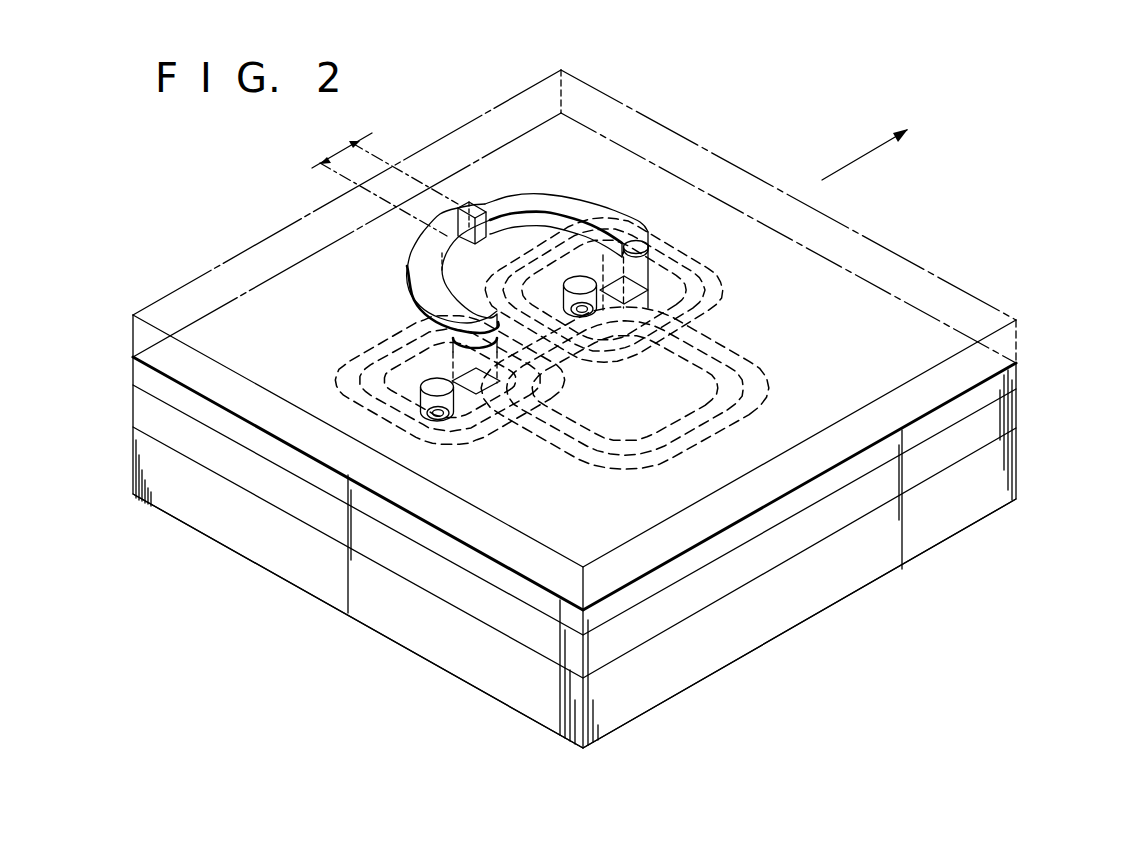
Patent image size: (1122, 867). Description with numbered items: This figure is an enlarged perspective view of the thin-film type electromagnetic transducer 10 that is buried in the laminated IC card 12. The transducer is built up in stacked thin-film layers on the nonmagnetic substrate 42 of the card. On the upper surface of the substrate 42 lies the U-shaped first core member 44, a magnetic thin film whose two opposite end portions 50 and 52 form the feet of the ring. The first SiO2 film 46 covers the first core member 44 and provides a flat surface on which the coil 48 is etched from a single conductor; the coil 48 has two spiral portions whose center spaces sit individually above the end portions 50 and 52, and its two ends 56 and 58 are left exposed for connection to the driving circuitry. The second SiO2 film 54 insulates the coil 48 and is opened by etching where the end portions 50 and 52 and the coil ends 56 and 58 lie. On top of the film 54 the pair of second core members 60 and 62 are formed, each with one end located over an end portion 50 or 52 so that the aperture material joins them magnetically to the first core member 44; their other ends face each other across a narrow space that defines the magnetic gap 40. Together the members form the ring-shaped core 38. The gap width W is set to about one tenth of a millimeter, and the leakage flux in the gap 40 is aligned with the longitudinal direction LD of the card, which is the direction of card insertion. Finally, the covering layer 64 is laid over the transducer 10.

The thin-film type electromagnetic transducer 10 is at (636, 192).
The IC card 12 is at (1040, 400).
The core 38 is at (733, 345).
The magnetic gap 40 is at (462, 207).
The nonmagnetic substrate 42 is at (1016, 460).
The first core member 44 is at (648, 435).
The first SiO2 film 46 is at (1016, 418).
The coil 48 is at (775, 290).
The end portion of first core member 50 is at (456, 372).
The end portion of first core member 52 is at (637, 278).
The second SiO2 film 54 is at (1018, 380).
The end of coil 56 is at (440, 416).
The end of coil 58 is at (582, 313).
The second core member 60 is at (406, 262).
The second core member 62 is at (565, 202).
The layer 64 is at (1018, 357).
The width of magnetic gap W is at (343, 140).
The longitudinal direction LD is at (862, 163).